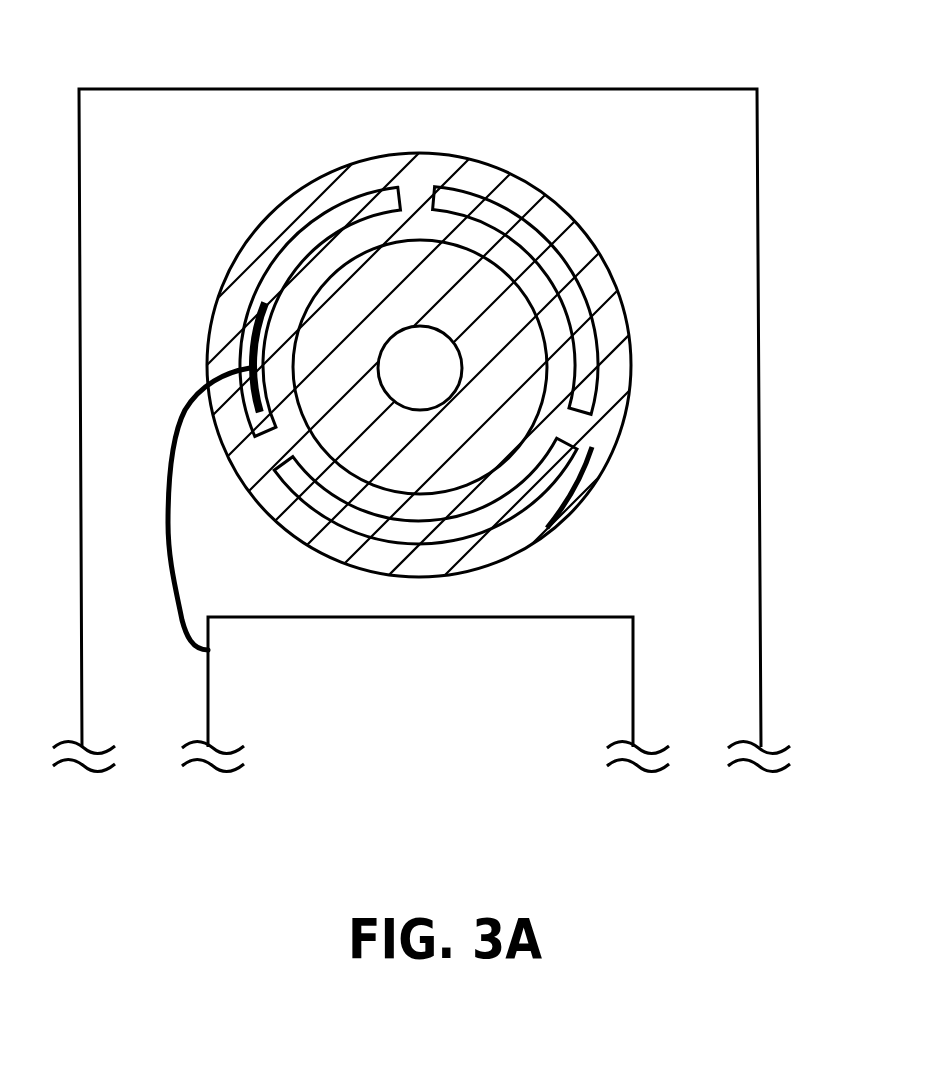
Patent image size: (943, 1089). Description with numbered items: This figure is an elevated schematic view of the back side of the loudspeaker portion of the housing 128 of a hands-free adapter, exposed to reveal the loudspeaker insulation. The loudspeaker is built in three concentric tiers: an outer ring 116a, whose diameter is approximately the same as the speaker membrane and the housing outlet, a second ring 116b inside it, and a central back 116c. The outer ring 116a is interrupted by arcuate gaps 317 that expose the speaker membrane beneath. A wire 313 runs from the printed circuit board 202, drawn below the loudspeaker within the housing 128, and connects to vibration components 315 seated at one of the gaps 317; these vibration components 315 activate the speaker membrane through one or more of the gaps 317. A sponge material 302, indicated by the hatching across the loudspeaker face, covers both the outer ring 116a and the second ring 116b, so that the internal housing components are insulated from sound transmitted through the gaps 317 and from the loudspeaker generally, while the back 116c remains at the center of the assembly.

The housing 128 is at (763, 342).
The printed circuit board 202 is at (447, 702).
The sponge material 302 is at (500, 195).
The outer ring 116a is at (605, 266).
The second ring 116b is at (420, 367).
The back 116c is at (420, 368).
The gaps 317 is at (387, 200).
The vibration components 315 is at (250, 345).
The wire 313 is at (178, 600).